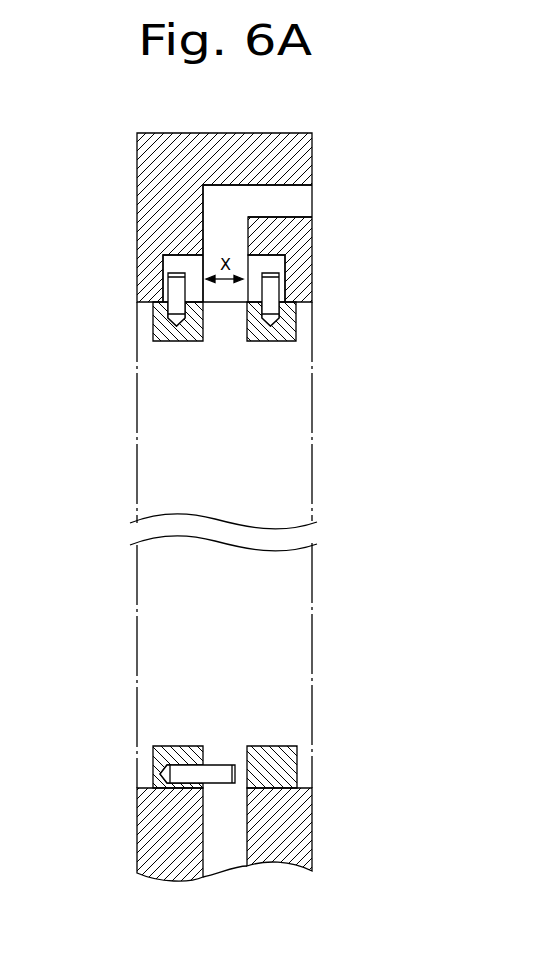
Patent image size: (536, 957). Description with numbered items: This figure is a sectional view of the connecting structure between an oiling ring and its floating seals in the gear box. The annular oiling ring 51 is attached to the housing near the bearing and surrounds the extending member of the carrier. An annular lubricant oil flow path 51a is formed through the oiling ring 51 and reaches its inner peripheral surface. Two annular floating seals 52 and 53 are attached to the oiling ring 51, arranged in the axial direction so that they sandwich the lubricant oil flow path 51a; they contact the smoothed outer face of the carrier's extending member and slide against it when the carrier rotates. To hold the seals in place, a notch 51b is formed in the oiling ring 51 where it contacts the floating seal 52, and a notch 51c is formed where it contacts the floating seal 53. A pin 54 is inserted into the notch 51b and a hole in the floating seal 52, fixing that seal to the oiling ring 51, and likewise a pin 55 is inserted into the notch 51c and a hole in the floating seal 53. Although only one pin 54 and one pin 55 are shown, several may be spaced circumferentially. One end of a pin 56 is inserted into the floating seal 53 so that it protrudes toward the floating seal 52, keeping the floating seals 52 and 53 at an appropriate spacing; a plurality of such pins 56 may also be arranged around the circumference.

The oiling ring 51 is at (312, 158).
The lubricant oil flow path 51a is at (312, 201).
The notch 51b is at (276, 262).
The notch 51c is at (166, 258).
The floating seal 52 is at (296, 328).
The floating seal 53 is at (153, 328).
The pin 54 is at (272, 283).
The pin 55 is at (175, 282).
The pin 56 is at (216, 765).